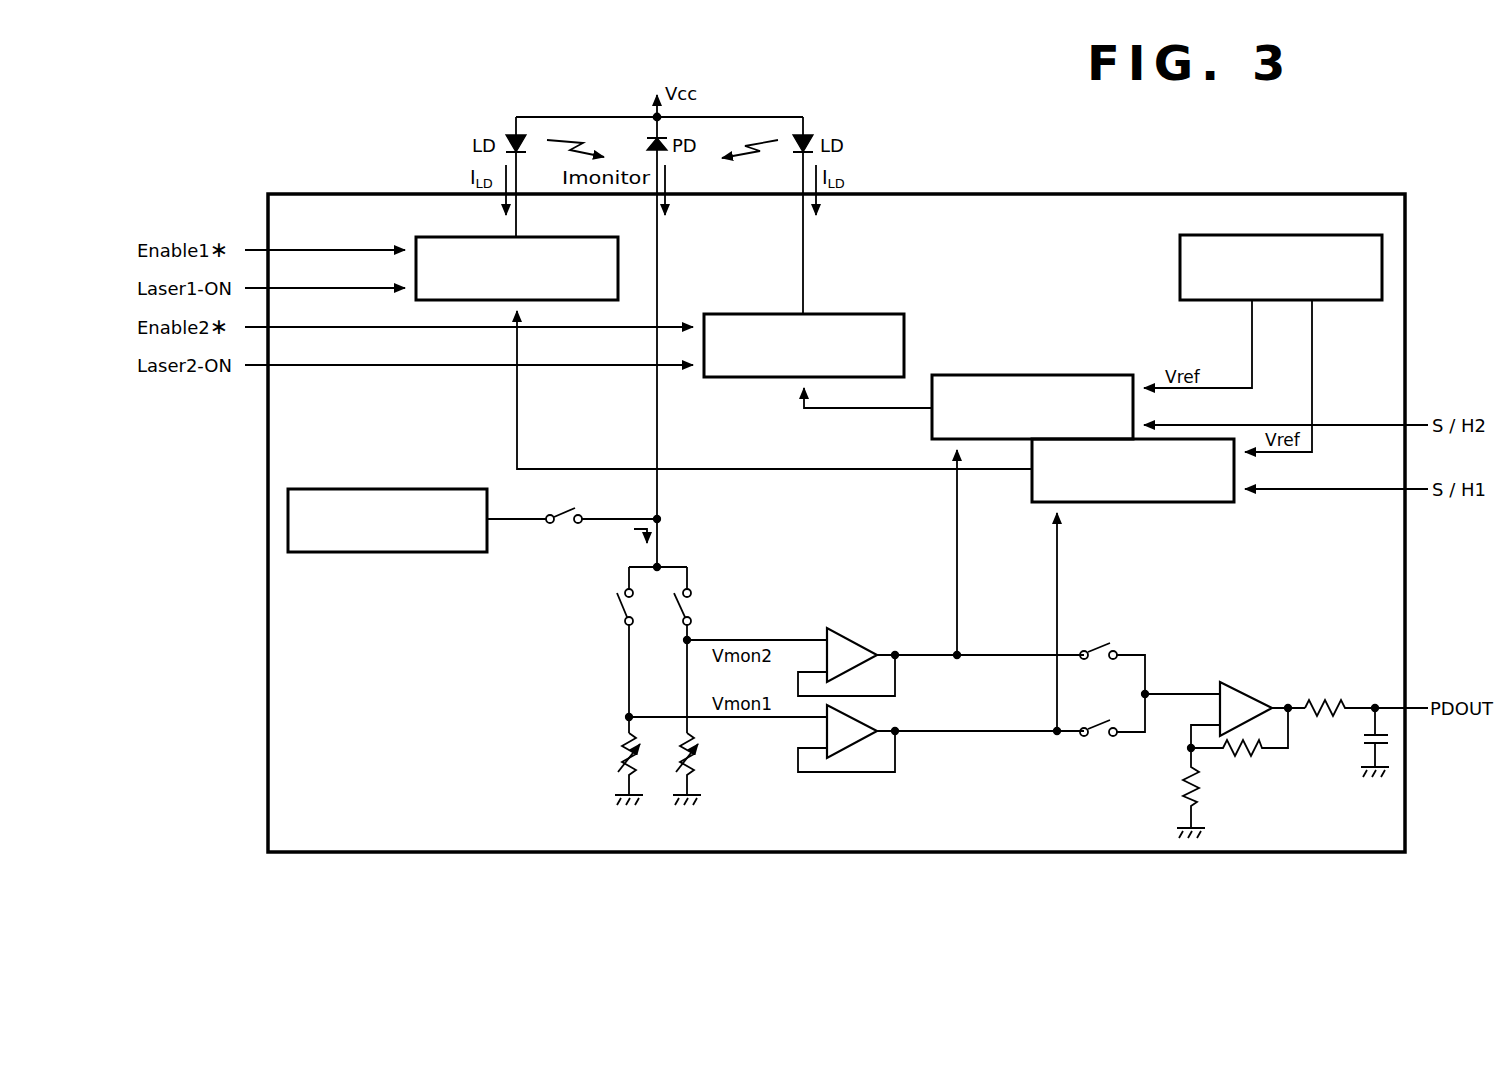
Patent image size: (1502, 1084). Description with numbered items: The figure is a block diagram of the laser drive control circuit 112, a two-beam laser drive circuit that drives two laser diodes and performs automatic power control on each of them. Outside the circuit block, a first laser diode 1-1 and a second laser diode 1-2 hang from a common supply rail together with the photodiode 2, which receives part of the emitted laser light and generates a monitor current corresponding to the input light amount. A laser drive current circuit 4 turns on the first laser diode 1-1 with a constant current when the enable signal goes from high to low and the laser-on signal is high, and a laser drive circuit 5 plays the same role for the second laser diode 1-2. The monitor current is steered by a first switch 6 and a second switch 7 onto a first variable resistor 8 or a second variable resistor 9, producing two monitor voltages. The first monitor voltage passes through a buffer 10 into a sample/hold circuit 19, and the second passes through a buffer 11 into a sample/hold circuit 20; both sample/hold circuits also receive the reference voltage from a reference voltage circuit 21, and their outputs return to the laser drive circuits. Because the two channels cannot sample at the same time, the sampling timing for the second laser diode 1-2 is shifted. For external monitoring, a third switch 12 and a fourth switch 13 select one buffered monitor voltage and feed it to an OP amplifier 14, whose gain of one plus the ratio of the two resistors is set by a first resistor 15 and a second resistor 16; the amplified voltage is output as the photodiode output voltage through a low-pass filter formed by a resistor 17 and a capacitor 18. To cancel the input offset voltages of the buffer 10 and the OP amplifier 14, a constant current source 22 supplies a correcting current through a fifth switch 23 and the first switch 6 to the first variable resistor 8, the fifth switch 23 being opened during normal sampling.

The laser diode LD1-1 1-1 is at (506, 136).
The laser diode LD1-2 1-2 is at (814, 136).
The photodiode PD2 2 is at (670, 152).
The laser drive current circuit 4 is at (442, 237).
The laser drive circuit 5 is at (872, 313).
The switch SW1 6 is at (615, 599).
The switch SW2 7 is at (694, 600).
The variable resistor VR1 8 is at (613, 748).
The variable resistor VR2 9 is at (706, 746).
The buffer 10 is at (862, 716).
The buffer 11 is at (858, 639).
The switch SW3 12 is at (1098, 740).
The switch SW4 13 is at (1100, 641).
The OP amplifier 14 is at (1252, 683).
The resistor R1 15 is at (1183, 797).
The resistor R2 16 is at (1254, 766).
The resistor 17 is at (1327, 697).
The capacitor 18 is at (1360, 738).
The sample/hold circuit 19 is at (1130, 503).
The sample/hold circuit 20 is at (1034, 374).
The reference voltage circuit 21 is at (1180, 265).
The constant current source 22 is at (390, 488).
The switch SW5 23 is at (565, 530).
The laser drive control circuit 112 is at (1305, 193).